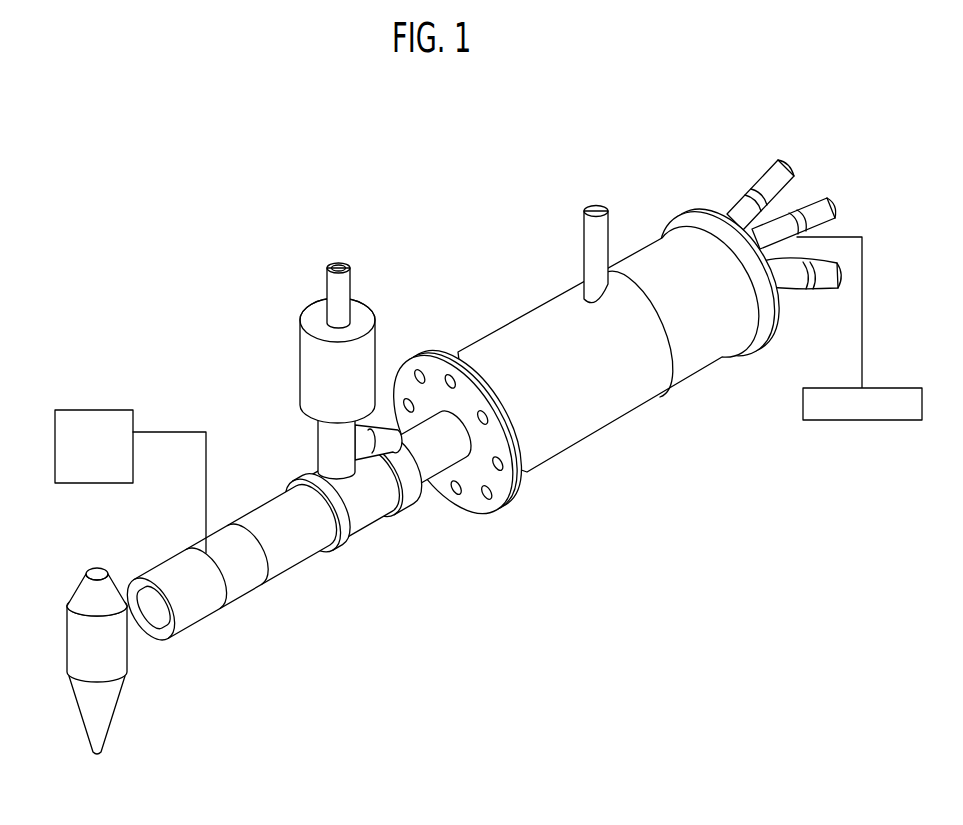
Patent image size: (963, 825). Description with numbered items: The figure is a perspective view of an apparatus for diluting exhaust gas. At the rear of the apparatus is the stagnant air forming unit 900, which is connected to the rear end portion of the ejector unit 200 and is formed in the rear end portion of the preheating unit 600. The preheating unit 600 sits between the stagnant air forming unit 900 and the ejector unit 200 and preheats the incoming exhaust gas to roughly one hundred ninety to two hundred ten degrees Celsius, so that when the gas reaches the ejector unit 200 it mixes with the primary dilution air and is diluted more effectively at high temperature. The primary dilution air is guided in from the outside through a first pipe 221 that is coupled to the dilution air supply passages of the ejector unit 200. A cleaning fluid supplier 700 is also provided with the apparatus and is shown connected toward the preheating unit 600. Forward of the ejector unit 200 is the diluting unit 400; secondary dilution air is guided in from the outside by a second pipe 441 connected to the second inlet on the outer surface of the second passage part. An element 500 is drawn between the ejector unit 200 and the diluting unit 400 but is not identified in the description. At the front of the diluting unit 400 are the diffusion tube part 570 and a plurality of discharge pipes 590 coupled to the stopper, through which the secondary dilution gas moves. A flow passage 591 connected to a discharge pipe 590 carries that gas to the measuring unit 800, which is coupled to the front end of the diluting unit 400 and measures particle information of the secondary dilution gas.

The ejector unit 200 is at (280, 345).
The first pipe 221 is at (340, 262).
The diluting unit 400 is at (628, 424).
The second pipe 441 is at (584, 215).
The flange 500 is at (445, 348).
The diffusion tube part 570 is at (703, 376).
The discharge pipe 590 is at (800, 270).
The flow passage 591 is at (863, 275).
The preheating unit 600 is at (240, 587).
The cleaning fluid supplier 700 is at (108, 408).
The measuring unit 800 is at (840, 388).
The stagnant air forming unit 900 is at (72, 554).